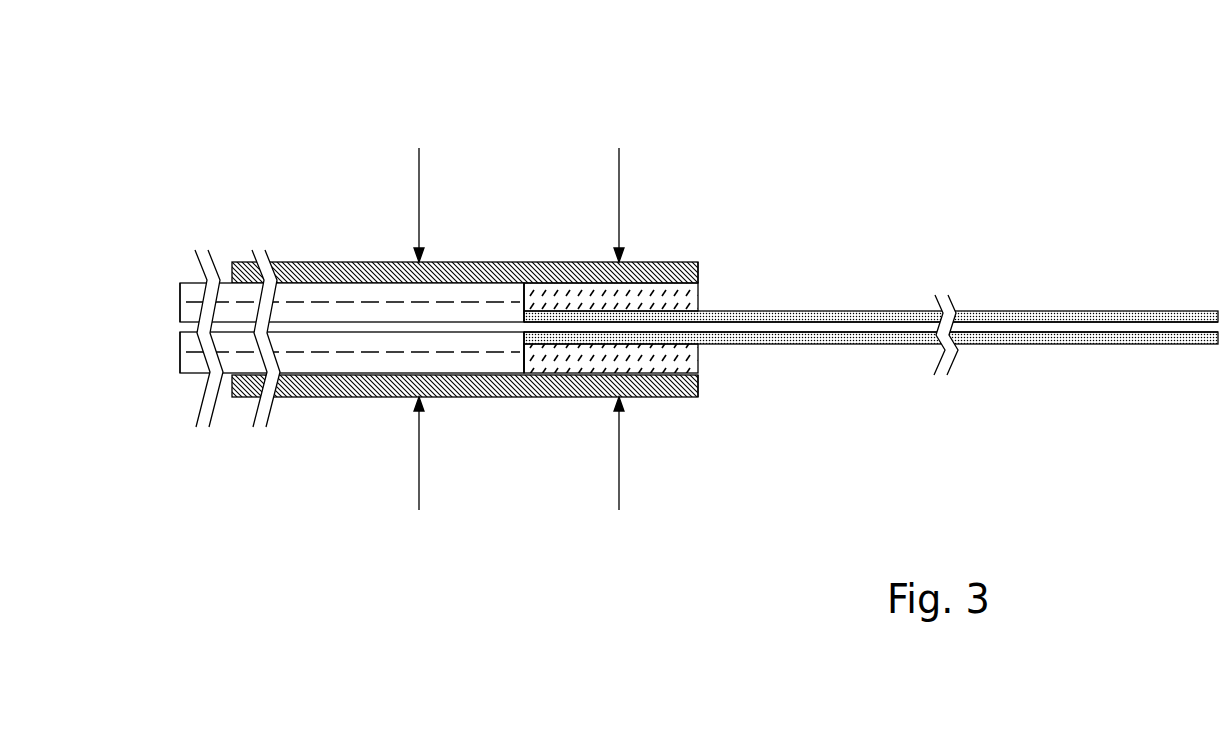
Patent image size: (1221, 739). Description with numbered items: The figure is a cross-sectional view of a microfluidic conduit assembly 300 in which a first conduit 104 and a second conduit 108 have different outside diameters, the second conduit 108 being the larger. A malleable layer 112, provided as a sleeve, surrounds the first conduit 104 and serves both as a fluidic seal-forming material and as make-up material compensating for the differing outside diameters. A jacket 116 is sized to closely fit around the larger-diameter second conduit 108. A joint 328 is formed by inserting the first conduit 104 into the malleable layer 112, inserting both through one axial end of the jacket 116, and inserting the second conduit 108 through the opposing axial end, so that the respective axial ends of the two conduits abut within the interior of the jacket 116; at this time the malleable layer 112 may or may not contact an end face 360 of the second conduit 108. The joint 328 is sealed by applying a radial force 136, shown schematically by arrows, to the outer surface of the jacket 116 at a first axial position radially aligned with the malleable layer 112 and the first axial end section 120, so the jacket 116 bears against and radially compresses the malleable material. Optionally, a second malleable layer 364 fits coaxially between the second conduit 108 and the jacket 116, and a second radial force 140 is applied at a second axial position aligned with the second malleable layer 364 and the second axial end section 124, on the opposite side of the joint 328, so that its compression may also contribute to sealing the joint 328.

The microfluidic conduit assembly 300 is at (243, 133).
The first conduit 104 is at (871, 307).
The second conduit 108 is at (192, 280).
The malleable layer 112 is at (700, 302).
The jacket 116 is at (700, 272).
The first axial end section 120 is at (657, 310).
The second axial end section 124 is at (370, 262).
The radial force 136 is at (619, 175).
The second radial force 140 is at (420, 167).
The joint 328 is at (523, 262).
The end face 360 is at (524, 360).
The second malleable layer 364 is at (180, 365).